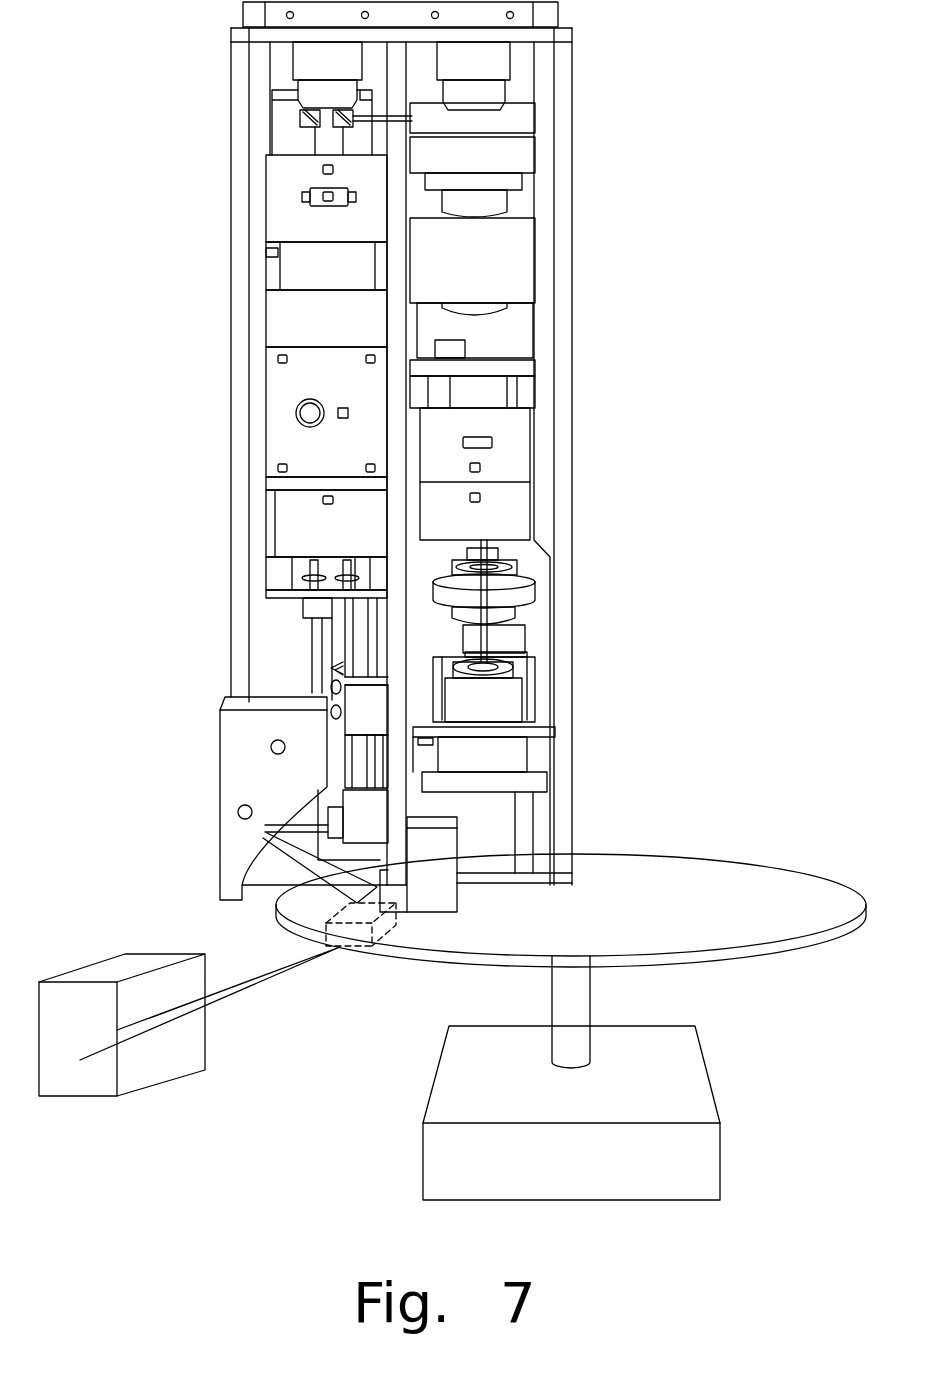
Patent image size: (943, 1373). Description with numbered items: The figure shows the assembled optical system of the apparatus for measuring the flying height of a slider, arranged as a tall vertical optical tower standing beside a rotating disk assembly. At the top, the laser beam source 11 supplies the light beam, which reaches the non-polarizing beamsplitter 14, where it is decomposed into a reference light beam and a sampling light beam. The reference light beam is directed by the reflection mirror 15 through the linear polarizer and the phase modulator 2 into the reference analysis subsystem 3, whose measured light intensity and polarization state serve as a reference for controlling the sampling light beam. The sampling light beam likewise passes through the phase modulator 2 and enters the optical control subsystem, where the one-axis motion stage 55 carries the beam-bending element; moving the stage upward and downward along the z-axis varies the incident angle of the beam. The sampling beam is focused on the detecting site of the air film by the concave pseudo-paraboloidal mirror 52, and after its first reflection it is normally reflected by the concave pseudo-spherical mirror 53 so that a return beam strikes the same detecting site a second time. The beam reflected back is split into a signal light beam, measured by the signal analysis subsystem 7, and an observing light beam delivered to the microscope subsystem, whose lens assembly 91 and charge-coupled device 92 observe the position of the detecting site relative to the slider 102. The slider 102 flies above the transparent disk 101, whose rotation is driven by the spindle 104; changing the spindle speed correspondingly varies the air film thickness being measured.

The phase modulator 2 is at (292, 312).
The reference analysis subsystem 3 is at (302, 448).
The signal analysis subsystem 7 is at (512, 453).
The laser beam source 11 is at (485, 205).
The non-polarizing beamsplitter 14 is at (350, 112).
The reflection mirror 15 is at (317, 117).
The concave pseudo-paraboloidal mirror 52 is at (242, 780).
The concave pseudo-spherical mirror 53 is at (430, 862).
The one-axis motion stage 55 is at (315, 650).
The lens assembly 91 is at (508, 596).
The charge-coupled device 92 is at (498, 704).
The transparent disk 101 is at (766, 897).
The slider 102 is at (359, 938).
The spindle 104 is at (684, 1153).